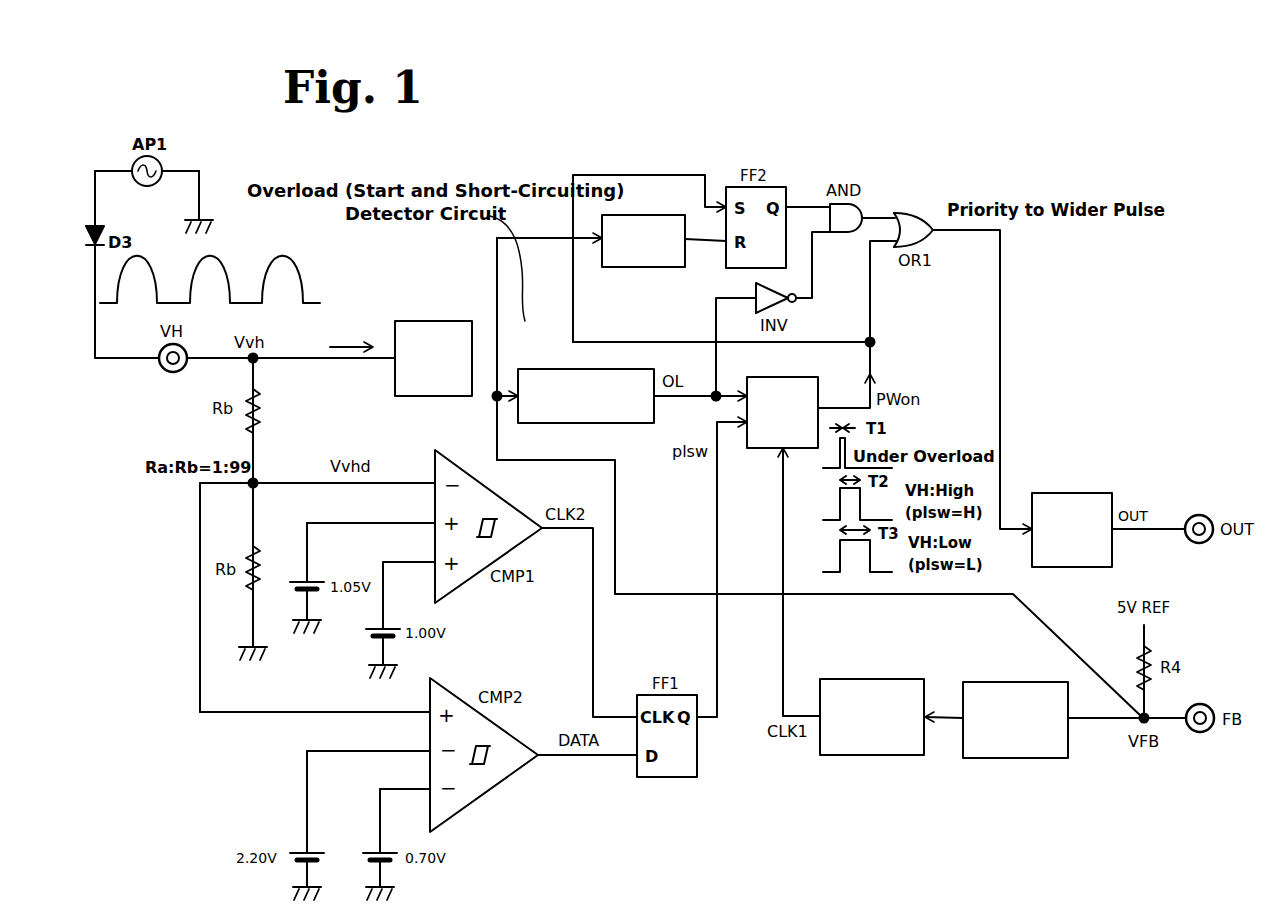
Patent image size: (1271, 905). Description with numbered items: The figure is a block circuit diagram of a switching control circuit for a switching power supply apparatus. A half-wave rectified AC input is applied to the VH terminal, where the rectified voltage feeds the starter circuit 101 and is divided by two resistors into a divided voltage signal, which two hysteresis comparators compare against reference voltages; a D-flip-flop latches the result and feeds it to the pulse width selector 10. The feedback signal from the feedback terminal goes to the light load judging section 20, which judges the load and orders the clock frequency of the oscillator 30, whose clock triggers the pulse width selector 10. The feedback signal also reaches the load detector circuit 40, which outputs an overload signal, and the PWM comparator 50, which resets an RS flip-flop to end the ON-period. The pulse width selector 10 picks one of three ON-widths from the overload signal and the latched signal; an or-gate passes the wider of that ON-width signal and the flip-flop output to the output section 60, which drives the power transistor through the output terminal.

The starter circuit 101 is at (430, 321).
The load detector circuit 40 is at (560, 369).
The PWM comparator 50 is at (638, 267).
The pulse width selector 10 is at (783, 376).
The output section 60 is at (1065, 493).
The oscillator 30 is at (870, 755).
The light load judging section 20 is at (1013, 758).